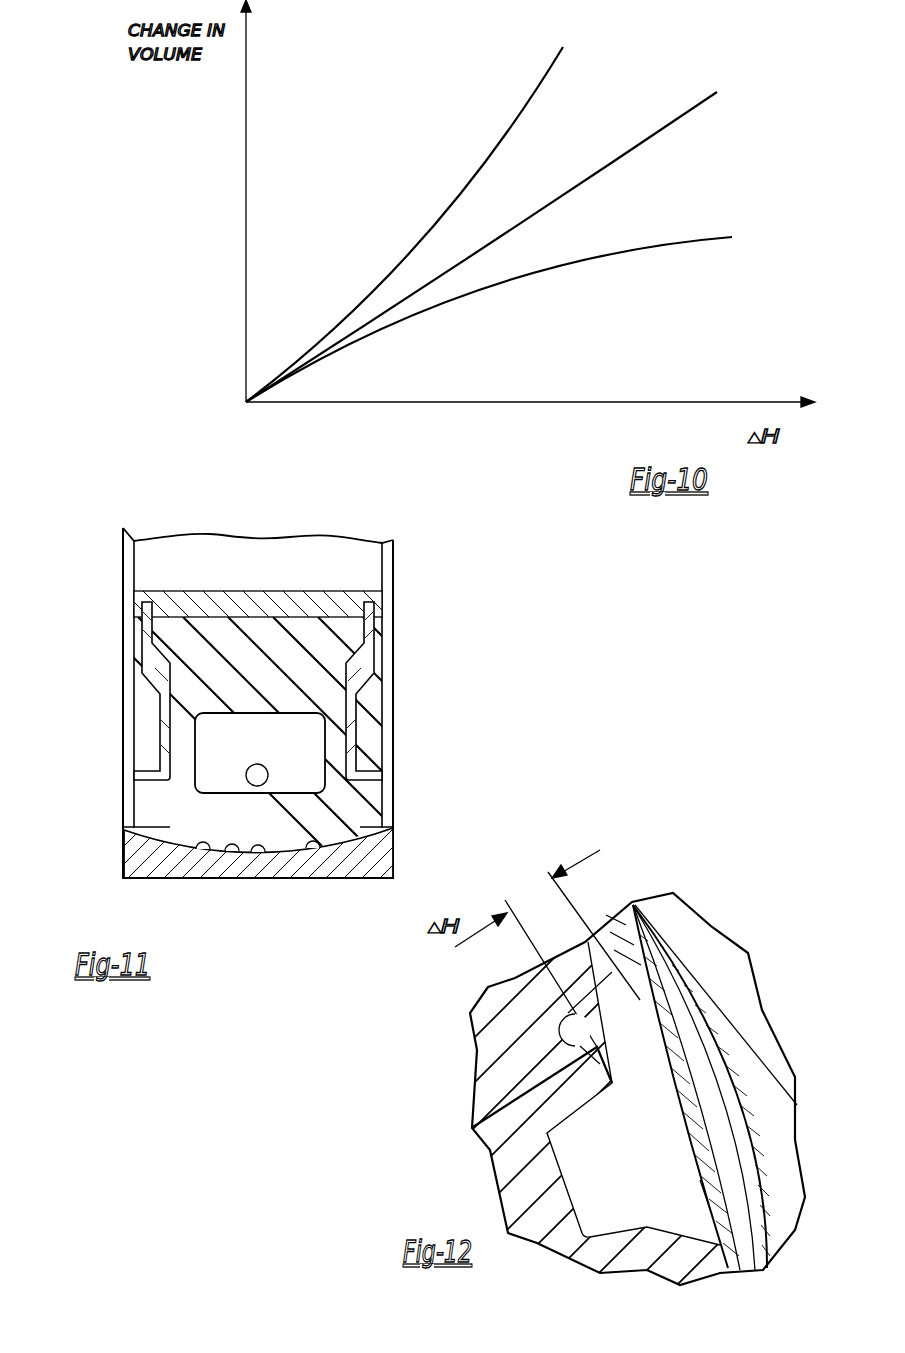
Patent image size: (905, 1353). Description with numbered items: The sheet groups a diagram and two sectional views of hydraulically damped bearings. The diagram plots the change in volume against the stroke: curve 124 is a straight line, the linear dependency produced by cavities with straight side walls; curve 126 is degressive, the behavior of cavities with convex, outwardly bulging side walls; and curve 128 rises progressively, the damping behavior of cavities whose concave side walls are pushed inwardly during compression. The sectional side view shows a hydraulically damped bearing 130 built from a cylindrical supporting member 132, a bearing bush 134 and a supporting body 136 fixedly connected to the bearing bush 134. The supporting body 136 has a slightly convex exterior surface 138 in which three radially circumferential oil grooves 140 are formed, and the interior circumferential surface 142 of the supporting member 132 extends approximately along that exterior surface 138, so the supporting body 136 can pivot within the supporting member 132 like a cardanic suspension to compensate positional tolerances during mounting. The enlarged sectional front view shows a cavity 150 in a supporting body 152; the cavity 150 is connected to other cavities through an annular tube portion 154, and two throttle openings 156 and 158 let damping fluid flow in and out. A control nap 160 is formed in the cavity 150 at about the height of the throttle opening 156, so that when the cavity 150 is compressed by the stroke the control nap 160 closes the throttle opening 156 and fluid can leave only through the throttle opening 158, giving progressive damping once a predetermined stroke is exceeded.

In FIG. 10, the curve 124 is at (702, 107).
In FIG. 10, the curve 126 is at (687, 242).
In FIG. 10, the curve 128 is at (553, 67).
In FIG. 11, the hydraulically damped bearing 130 is at (111, 561).
In FIG. 11, the supporting member 132 is at (383, 858).
In FIG. 11, the bearing bush 134 is at (345, 600).
In FIG. 11, the supporting body 136 is at (313, 690).
In FIG. 11, the exterior surface 138 is at (149, 841).
In FIG. 11, the oil grooves 140 is at (316, 848).
In FIG. 11, the interior circumferential surface 142 is at (232, 845).
In FIG. 12, the cavity 150 is at (572, 1152).
In FIG. 12, the supporting body 152 is at (715, 963).
In FIG. 12, the annular tube portion 154 is at (630, 903).
In FIG. 12, the throttle opening 156 is at (655, 1036).
In FIG. 12, the throttle opening 158 is at (707, 1158).
In FIG. 12, the control nap 160 is at (598, 1060).